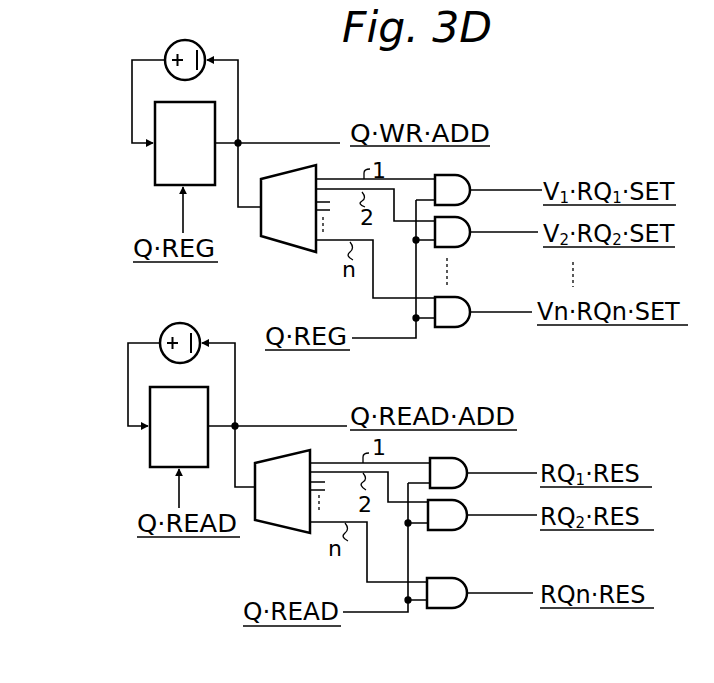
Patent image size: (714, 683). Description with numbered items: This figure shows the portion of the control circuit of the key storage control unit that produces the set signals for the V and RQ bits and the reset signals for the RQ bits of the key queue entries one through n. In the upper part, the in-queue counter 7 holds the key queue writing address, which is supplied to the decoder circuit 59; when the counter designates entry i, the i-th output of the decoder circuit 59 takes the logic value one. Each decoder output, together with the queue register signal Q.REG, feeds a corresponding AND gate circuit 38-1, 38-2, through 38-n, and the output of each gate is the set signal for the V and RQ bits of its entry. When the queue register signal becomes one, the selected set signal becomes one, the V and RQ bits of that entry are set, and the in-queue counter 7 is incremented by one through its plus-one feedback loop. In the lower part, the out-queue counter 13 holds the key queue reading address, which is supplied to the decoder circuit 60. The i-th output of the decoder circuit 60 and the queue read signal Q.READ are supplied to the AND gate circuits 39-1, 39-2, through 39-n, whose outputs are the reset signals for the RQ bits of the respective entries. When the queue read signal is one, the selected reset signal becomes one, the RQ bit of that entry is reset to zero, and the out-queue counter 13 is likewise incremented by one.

The in-queue counter 7 is at (143, 167).
The decoder circuit 59 is at (286, 249).
The AND gate circuit 38-1 is at (470, 175).
The AND gate circuit 38-2 is at (466, 219).
The AND gate circuit 38-n is at (452, 297).
The out-queue counter 13 is at (142, 457).
The decoder circuit 60 is at (273, 530).
The AND gate circuit 39-1 is at (458, 460).
The AND gate circuit 39-2 is at (458, 502).
The AND gate circuit 39-n is at (447, 578).